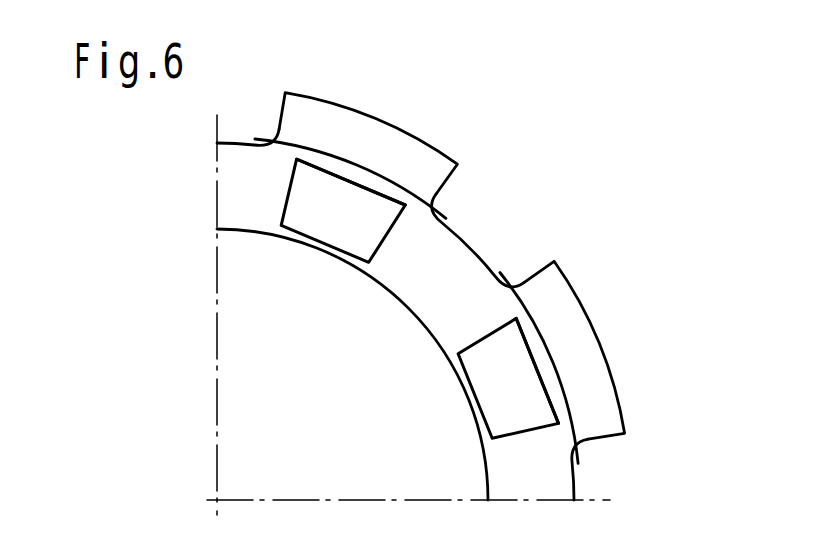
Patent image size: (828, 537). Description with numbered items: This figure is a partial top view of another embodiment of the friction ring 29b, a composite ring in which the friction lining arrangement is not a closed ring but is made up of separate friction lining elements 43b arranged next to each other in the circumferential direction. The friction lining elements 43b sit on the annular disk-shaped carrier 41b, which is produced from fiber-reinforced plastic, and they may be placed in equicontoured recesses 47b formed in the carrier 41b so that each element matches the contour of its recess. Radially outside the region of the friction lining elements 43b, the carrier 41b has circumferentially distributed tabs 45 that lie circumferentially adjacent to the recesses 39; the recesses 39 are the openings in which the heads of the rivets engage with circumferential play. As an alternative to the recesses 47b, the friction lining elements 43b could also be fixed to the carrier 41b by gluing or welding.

The friction ring 29b is at (453, 259).
The recesses 39 is at (242, 130).
The carrier 41b is at (407, 309).
The friction lining elements 43b is at (333, 220).
The tabs 45 is at (403, 142).
The recesses 47b is at (295, 180).